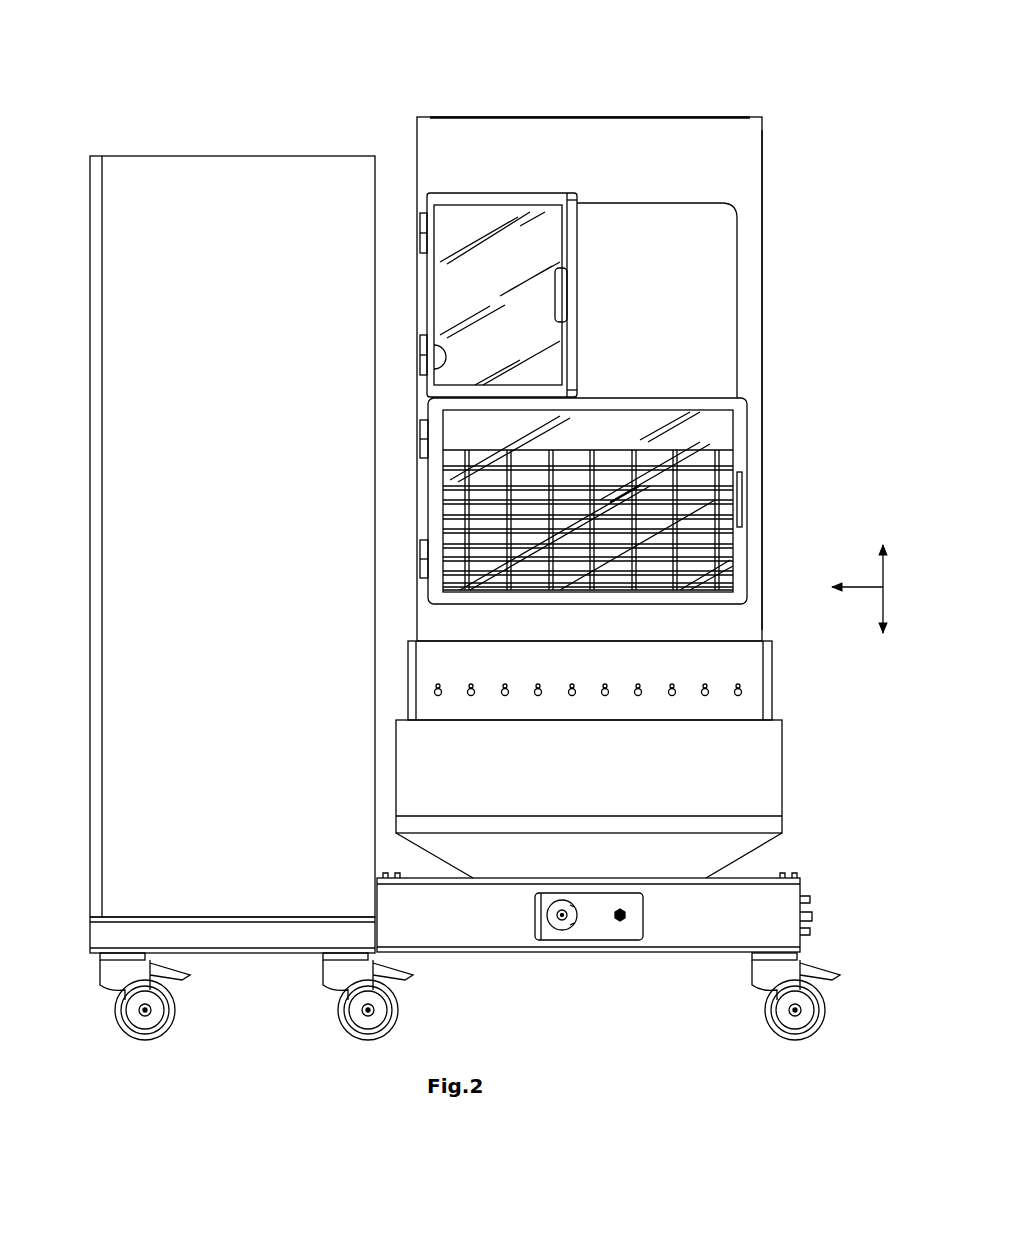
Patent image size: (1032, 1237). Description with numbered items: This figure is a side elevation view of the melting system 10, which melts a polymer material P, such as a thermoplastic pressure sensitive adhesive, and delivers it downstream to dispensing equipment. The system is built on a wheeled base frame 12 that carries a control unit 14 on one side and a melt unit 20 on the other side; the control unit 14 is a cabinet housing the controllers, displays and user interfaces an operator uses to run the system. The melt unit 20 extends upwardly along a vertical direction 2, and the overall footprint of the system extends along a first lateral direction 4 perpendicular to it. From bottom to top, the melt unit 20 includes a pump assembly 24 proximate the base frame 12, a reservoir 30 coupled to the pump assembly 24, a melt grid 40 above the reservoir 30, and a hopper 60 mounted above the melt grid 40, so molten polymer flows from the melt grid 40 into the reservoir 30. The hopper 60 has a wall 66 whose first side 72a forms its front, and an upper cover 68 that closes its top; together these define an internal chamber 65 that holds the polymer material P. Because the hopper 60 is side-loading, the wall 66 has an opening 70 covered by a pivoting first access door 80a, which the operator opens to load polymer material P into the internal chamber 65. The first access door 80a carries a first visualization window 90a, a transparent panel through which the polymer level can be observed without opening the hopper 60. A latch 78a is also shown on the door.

The melting system 10 is at (172, 108).
The base frame 12 is at (88, 930).
The control unit 14 is at (240, 590).
The melt unit 20 is at (528, 94).
The pump assembly 24 is at (600, 958).
The reservoir 30 is at (790, 773).
The melt grid 40 is at (780, 683).
The hopper 60 is at (680, 115).
The internal chamber 65 is at (670, 307).
The wall 66 is at (720, 170).
The upper cover 68 is at (598, 116).
The opening 70 is at (741, 250).
The first side 72a is at (623, 166).
The latch 78a is at (445, 360).
The first access door 80a is at (417, 315).
The first visualization window 90a is at (483, 270).
The polymer material P is at (690, 447).
The vertical direction 2 is at (894, 589).
The first lateral direction 4 is at (844, 588).